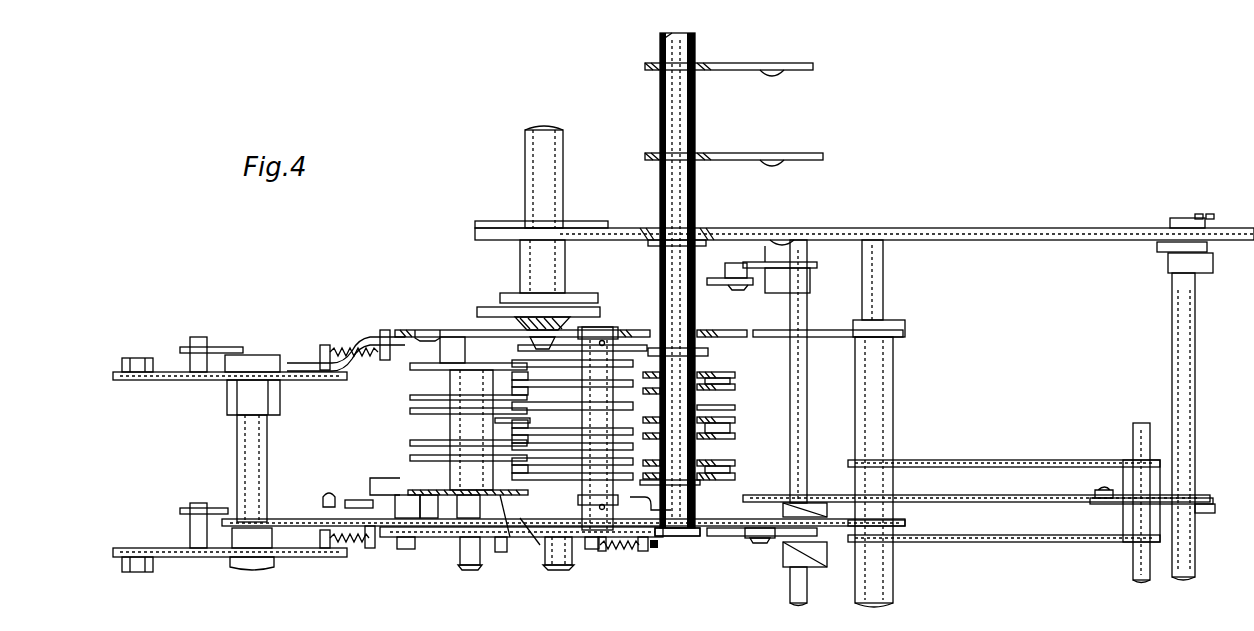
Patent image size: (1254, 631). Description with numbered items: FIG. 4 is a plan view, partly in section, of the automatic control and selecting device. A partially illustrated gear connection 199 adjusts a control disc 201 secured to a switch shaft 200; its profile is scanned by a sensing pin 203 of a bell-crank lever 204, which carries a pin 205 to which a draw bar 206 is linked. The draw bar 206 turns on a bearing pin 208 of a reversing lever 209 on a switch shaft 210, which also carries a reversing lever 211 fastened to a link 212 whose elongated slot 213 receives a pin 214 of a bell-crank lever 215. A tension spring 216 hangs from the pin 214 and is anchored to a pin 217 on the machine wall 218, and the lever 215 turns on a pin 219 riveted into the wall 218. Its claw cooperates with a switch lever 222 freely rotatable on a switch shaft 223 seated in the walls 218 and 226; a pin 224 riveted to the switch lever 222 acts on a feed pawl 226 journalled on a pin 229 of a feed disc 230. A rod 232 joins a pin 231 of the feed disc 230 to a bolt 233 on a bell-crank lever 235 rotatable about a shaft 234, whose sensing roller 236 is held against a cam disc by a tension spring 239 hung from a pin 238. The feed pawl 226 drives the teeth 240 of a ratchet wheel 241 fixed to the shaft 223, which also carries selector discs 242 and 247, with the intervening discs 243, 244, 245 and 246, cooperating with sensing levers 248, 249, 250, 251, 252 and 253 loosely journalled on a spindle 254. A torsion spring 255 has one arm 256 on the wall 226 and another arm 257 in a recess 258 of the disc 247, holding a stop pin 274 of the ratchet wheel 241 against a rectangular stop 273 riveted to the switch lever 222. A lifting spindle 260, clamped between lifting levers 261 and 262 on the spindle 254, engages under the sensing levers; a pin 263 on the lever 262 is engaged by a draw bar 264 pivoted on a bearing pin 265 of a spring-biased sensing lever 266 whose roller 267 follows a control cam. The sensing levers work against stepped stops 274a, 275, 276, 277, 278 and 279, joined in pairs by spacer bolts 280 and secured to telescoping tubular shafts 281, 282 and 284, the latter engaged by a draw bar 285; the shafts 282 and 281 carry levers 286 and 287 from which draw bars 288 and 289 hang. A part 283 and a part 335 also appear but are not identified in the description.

The gear connection 199 is at (1162, 250).
The switch shaft 200 is at (1180, 389).
The control disc 201 is at (1214, 508).
The scanning or sensing pin 203 is at (1200, 512).
The bell-crank lever 204 is at (1210, 498).
The pin 205 is at (1103, 490).
The draw bar 206 is at (1005, 535).
The bearing pin 208 is at (800, 483).
The reversing lever 209 is at (808, 570).
The switch shaft 210 is at (805, 390).
The reversing lever 211 is at (785, 567).
The link 212 is at (672, 537).
The elongated slot 213 is at (604, 552).
The pin 214 is at (615, 550).
The bell-crank lever 215 is at (572, 565).
The tension spring 216 is at (643, 551).
The pin 217 is at (671, 551).
The machine wall 218 is at (735, 537).
The pin 219 is at (545, 550).
The switch lever 222 is at (500, 552).
The switch shaft 223 is at (470, 568).
The pin 224 is at (406, 549).
The feed pawl 226 is at (403, 330).
The pin 229 is at (340, 498).
The feed disc 230 is at (322, 510).
The pin 231 is at (528, 537).
The rod 232 is at (220, 508).
The bolt 233 is at (198, 503).
The shaft 234 is at (246, 438).
The bell-crank lever 235 is at (218, 557).
The scanning or sensing roller 236 is at (157, 572).
The pin 238 is at (325, 548).
The tension spring 239 is at (350, 543).
The teeth 240 is at (372, 490).
The ratchet wheel 241 is at (512, 545).
The selector disc 242 is at (412, 492).
The shelf 243 is at (410, 457).
The shelf 244 is at (410, 441).
The shelf 245 is at (410, 410).
The shelf 246 is at (410, 397).
The selector disc 247 is at (372, 350).
The scanning or sensing lever 248 is at (590, 549).
The scanning or sensing lever 249 is at (524, 482).
The scanning or sensing lever 250 is at (524, 444).
The scanning or sensing lever 251 is at (510, 420).
The scanning or sensing lever 252 is at (524, 398).
The scanning or sensing lever 253 is at (562, 363).
The spindle 254 is at (610, 335).
The torsion spring 255 is at (497, 335).
The arm 256 is at (450, 337).
The arm 257 is at (427, 338).
The recess 258 is at (452, 380).
The lifting spindle 260 is at (655, 484).
The lifting lever 261 is at (652, 503).
The lifting lever 262 is at (684, 350).
The pin 263 is at (560, 330).
The draw bar 264 is at (542, 320).
The bearing pin 265 is at (200, 350).
The scanning or sensing lever 266 is at (165, 372).
The sensing roller 267 is at (118, 372).
The rectangular stop 273 is at (466, 518).
The stop pin 274 is at (428, 495).
The stepped stop 274a is at (742, 470).
The stepped stop 275 is at (733, 462).
The stepped stop 276 is at (733, 436).
The stepped stop 277 is at (733, 419).
The stepped stop 278 is at (733, 386).
The stepped stop 279 is at (730, 375).
The spacer bolt 280 is at (848, 463).
The tubular shaft 281 is at (760, 543).
The tubular shaft 282 is at (717, 404).
The bracket 283 is at (700, 300).
The telescoping tubular shaft 284 is at (736, 244).
The draw bar 285 is at (820, 262).
The lever 286 is at (735, 160).
The lever 287 is at (727, 70).
The draw bar 288 is at (808, 160).
The draw bar 289 is at (806, 70).
The pin 335 is at (370, 548).